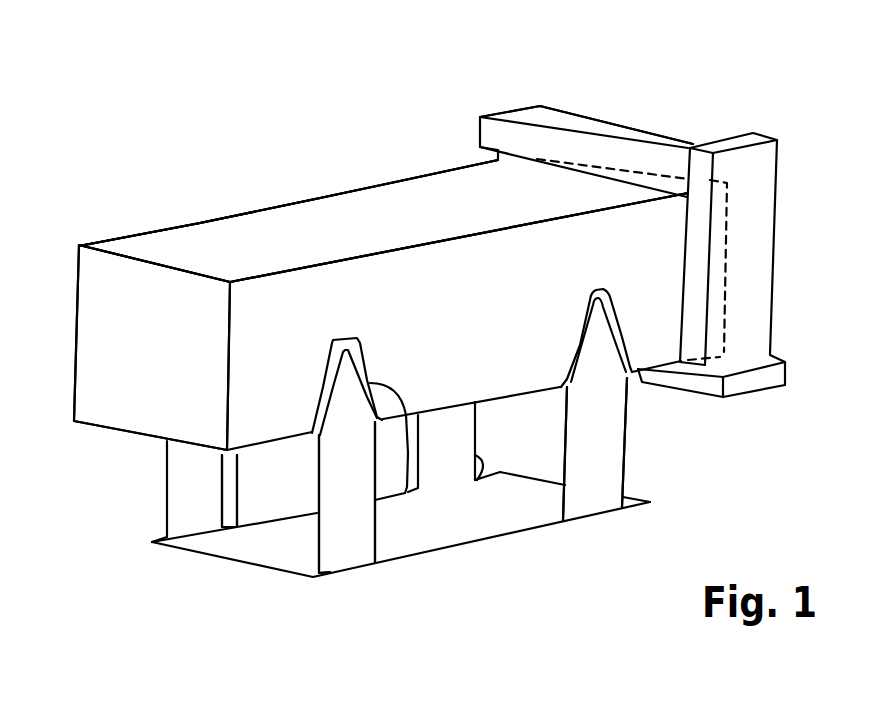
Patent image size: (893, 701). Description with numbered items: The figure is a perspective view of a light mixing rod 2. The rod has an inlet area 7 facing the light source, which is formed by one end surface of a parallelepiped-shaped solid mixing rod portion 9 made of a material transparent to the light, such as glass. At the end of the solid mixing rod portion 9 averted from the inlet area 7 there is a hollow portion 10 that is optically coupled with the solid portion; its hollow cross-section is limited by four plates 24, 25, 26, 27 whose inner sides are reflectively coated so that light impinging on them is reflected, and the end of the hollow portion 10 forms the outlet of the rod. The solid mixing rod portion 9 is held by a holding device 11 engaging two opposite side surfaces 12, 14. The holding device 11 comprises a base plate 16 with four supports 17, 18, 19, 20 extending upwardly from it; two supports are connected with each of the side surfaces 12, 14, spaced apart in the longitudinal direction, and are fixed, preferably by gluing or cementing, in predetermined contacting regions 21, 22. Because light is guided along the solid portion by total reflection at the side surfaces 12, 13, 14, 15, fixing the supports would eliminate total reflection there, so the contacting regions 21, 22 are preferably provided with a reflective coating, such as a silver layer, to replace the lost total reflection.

The light mixing rod 2 is at (390, 174).
The inlet area 7 is at (103, 408).
The solid mixing rod portion 9 is at (118, 231).
The hollow portion 10 is at (507, 104).
The holding device 11 is at (364, 582).
The side surface 12 is at (252, 296).
The side surface 13 is at (267, 222).
The side surface 14 is at (320, 197).
The side surface 15 is at (218, 530).
The base plate 16 is at (243, 565).
The support 17 is at (314, 555).
The support 18 is at (560, 505).
The support 19 is at (477, 481).
The support 20 is at (165, 508).
The contacting region 21 is at (405, 494).
The contacting region 22 is at (632, 370).
The plate 24 is at (555, 113).
The plate 25 is at (492, 158).
The plate 26 is at (755, 396).
The plate 27 is at (771, 325).